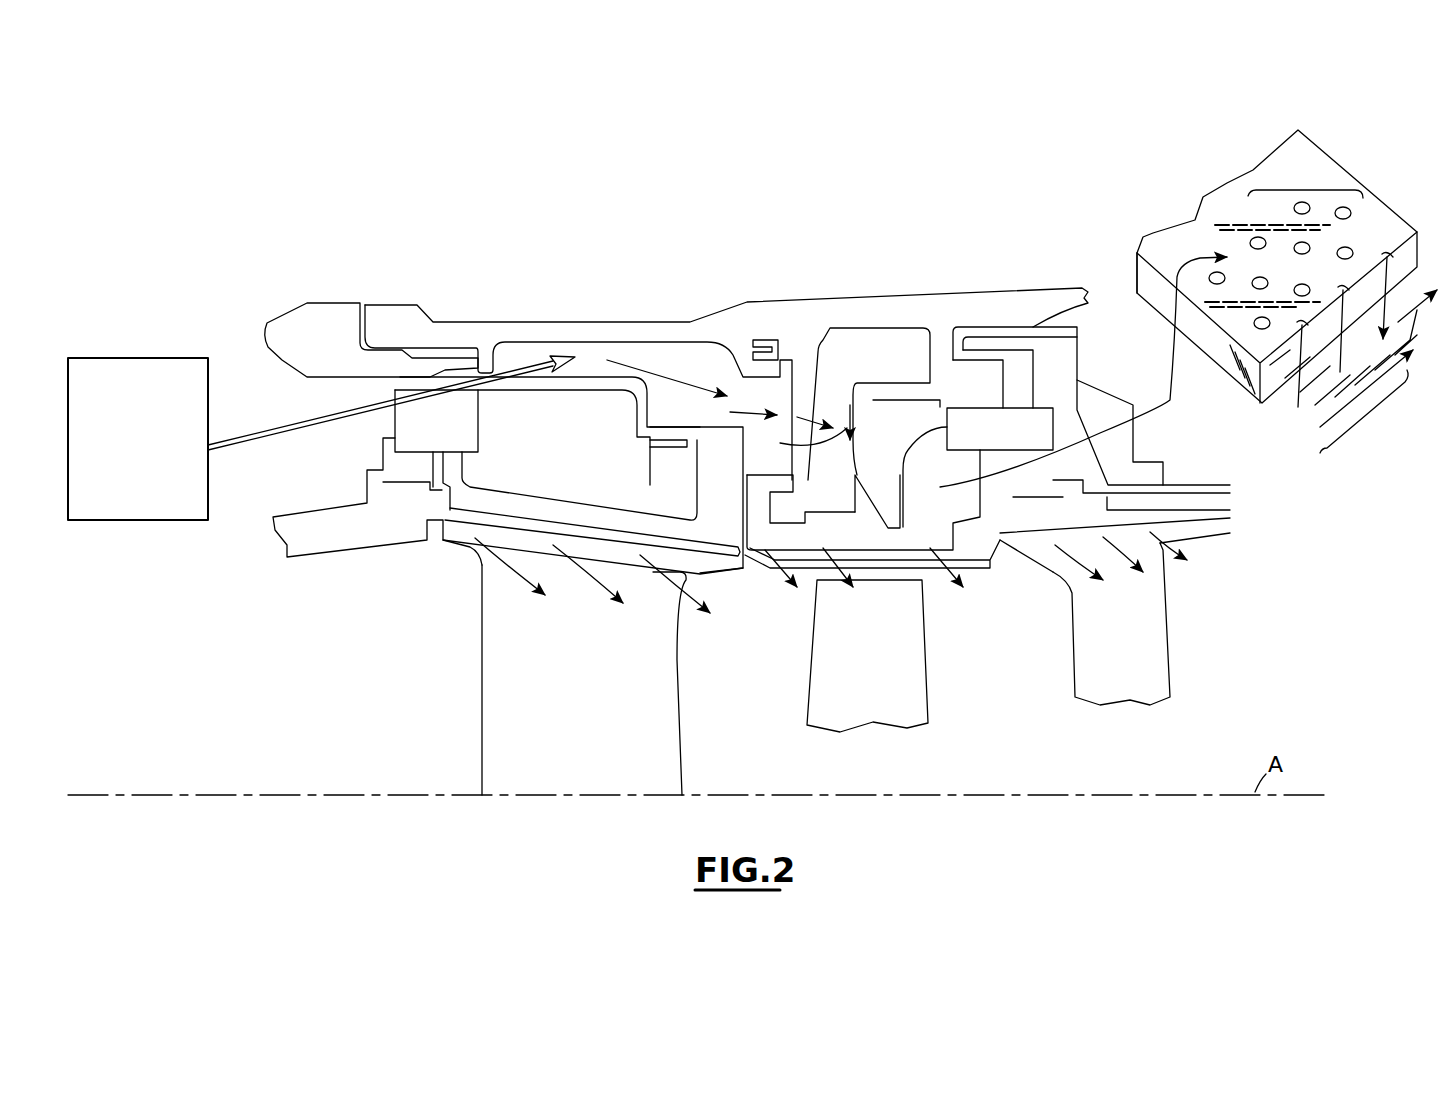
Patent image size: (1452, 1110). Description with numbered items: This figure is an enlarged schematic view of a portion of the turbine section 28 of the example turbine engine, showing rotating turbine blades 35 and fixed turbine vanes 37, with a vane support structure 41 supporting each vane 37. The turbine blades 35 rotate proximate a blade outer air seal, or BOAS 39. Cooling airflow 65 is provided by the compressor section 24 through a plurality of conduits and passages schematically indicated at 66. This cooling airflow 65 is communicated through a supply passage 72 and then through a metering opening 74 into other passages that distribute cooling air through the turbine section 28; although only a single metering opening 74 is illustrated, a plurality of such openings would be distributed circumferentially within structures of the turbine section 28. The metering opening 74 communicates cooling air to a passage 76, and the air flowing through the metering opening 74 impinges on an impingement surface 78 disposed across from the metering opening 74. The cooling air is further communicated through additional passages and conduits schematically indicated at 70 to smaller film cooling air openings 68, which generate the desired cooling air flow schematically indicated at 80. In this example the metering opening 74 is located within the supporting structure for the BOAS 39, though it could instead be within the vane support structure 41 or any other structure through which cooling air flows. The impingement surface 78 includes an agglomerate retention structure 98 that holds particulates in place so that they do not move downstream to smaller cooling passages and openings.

The compressor section 24 is at (154, 450).
The turbine section 28 is at (900, 106).
The turbine blades 35 is at (900, 667).
The turbine vanes 37 is at (645, 667).
The blade outer air seal (BOAS) 39 is at (975, 548).
The vane support structure 41 is at (588, 383).
The cooling airflow 65 is at (693, 387).
The conduits and passages 66 is at (323, 420).
The film cooling air openings 68 is at (1305, 190).
The additional passages and conduits 70 is at (1165, 418).
The supply passage 72 is at (680, 365).
The metering opening 74 is at (820, 397).
The passage 76 is at (890, 360).
The impingement surface 78 is at (843, 418).
The cooling air flow 80 is at (1370, 420).
The agglomerate retention structure 98 is at (796, 444).